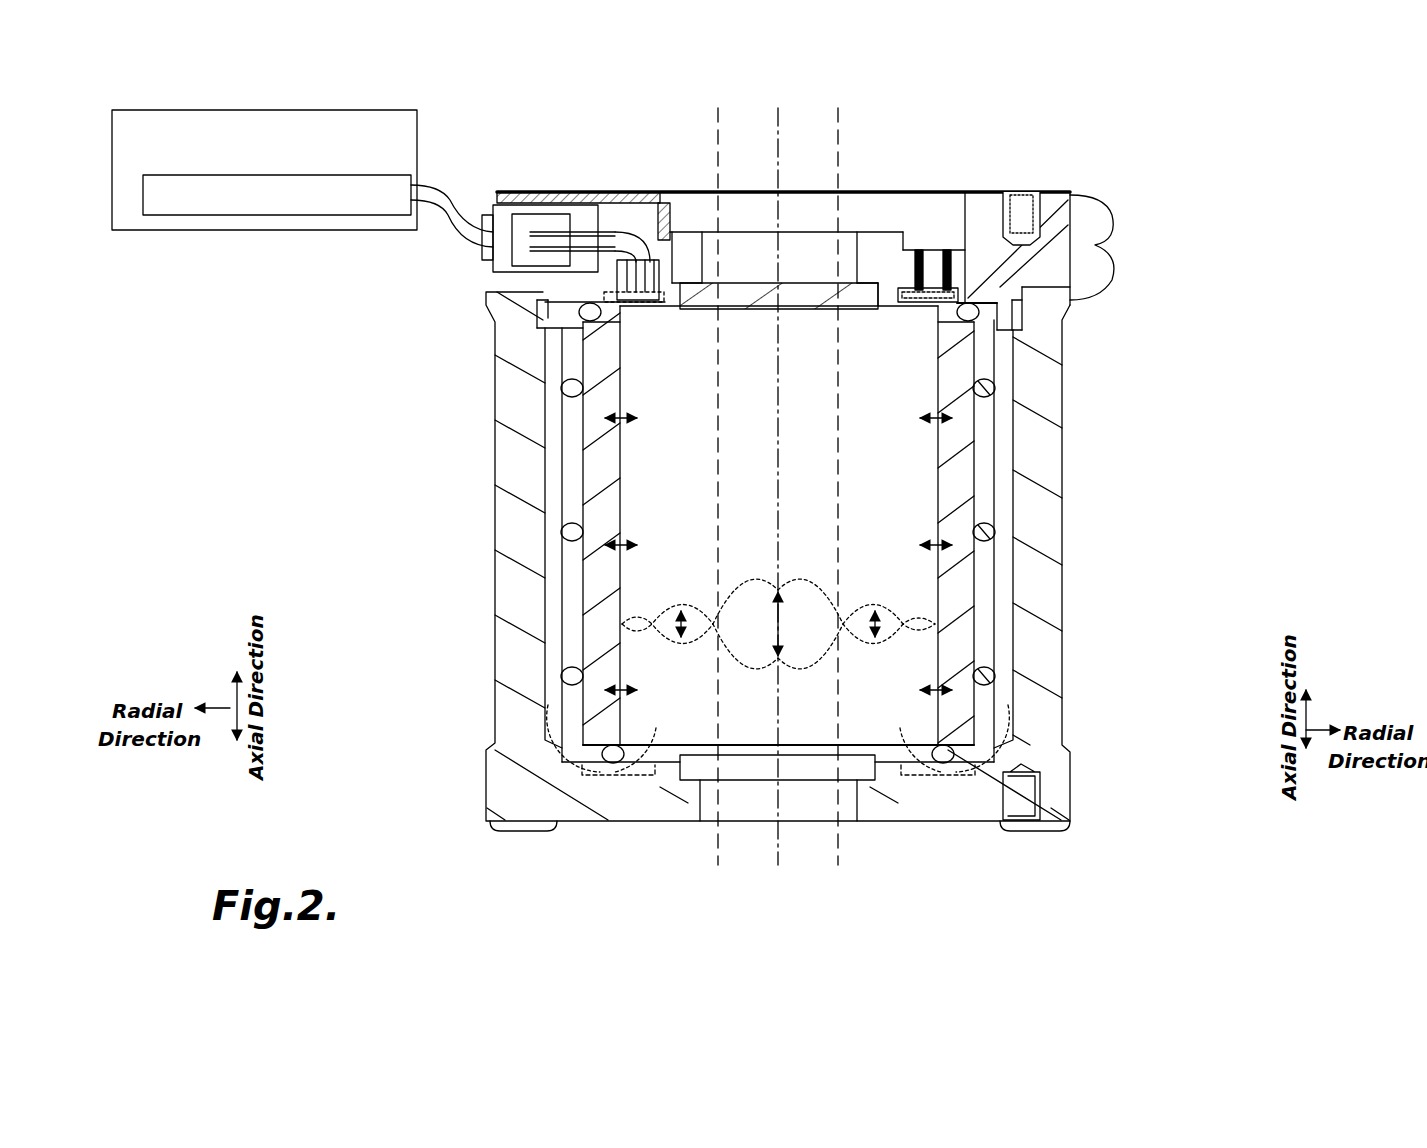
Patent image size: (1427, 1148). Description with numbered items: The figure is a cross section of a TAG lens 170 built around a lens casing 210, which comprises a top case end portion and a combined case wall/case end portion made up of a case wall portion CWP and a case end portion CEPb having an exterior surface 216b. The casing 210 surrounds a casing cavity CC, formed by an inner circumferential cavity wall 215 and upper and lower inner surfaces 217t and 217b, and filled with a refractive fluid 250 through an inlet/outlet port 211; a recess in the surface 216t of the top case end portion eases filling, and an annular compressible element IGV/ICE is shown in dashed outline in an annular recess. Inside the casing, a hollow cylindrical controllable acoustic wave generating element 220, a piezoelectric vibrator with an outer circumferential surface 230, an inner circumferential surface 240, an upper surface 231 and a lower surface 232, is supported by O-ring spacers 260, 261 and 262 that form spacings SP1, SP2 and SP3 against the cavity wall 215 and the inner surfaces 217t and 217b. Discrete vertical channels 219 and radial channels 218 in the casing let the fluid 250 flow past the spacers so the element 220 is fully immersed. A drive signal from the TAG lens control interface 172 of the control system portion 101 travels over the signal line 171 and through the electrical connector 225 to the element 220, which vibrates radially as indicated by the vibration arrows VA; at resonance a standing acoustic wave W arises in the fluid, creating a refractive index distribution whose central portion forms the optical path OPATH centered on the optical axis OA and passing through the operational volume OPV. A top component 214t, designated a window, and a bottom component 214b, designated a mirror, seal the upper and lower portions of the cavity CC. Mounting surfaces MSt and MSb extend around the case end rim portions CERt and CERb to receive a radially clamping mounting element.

The control system portion 101 is at (205, 110).
The TAG lens control interface 172 is at (180, 178).
The signal line 171 is at (435, 185).
The electrical connector 225 is at (500, 232).
The inlet/outlet port 211 is at (950, 312).
The lens casing 210 is at (1090, 232).
The mounting surface MSt is at (1080, 205).
The case end rim portion CERt is at (535, 188).
The top component 214t is at (740, 283).
The surface 216t is at (932, 272).
The annular compressible element IGV is at (930, 250).
The upper inner surface 217t is at (882, 305).
The controllable acoustic wave generating element 220 is at (965, 455).
The upper surface 231 is at (1020, 332).
The vertical channels 219 is at (560, 690).
The inner circumferential cavity wall 215 is at (570, 410).
The spacers 261 is at (578, 340).
The outer circumferential surface 230 is at (600, 580).
The spacers 260 is at (990, 690).
The spacers 262 is at (613, 752).
The refractive fluid 250 is at (1000, 525).
The vibration arrows VA is at (913, 565).
The spacing SP1 is at (555, 500).
The spacing SP2 is at (915, 312).
The spacing SP3 is at (900, 745).
The casing cavity CC is at (688, 360).
The standing acoustic wave W is at (822, 604).
The optical path OPATH is at (808, 150).
The optical axis OA is at (778, 508).
The operational volume OPV is at (795, 682).
The radial channels 218 is at (625, 822).
The case end portion CEPb is at (460, 834).
The mounting surface MSb is at (480, 792).
The case end rim portion CERb is at (522, 836).
The lower surface 232 is at (1012, 778).
The bottom component 214b is at (752, 782).
The lower inner surface 217b is at (855, 785).
The exterior surface 216b is at (870, 822).
The inner circumferential surface 240 is at (945, 782).
The case wall portion CWP is at (486, 755).
The TAG lens 170 is at (1292, 120).